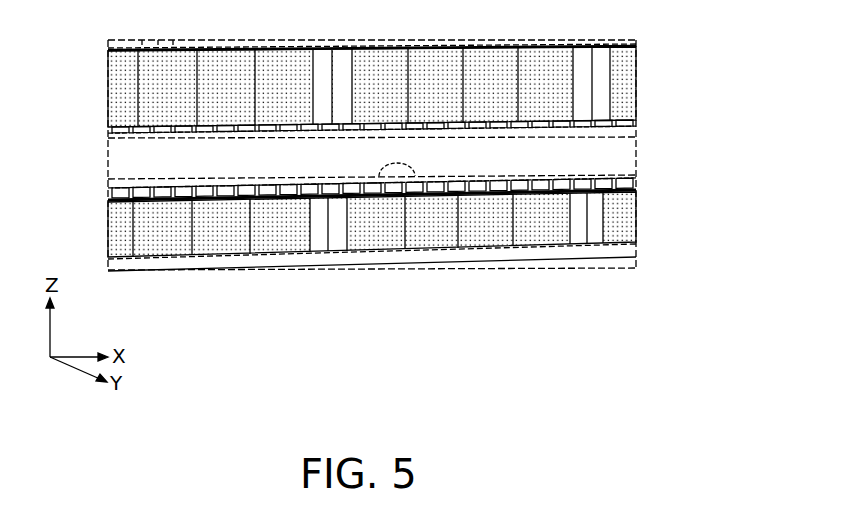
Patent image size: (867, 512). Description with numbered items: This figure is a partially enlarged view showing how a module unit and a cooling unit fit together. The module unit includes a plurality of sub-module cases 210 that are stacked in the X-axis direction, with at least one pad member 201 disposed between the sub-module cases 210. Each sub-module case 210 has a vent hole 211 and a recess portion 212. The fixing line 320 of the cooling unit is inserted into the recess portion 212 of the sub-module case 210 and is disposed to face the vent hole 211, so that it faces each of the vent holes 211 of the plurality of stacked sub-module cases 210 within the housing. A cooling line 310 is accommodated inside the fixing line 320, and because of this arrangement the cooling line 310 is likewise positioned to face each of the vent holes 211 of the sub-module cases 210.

The pad member 201 is at (602, 90).
The sub-module case 210 is at (543, 222).
The vent hole 211 is at (420, 192).
The recess portion 212 is at (470, 192).
The cooling line 310 is at (218, 187).
The fixing line 320 is at (287, 190).